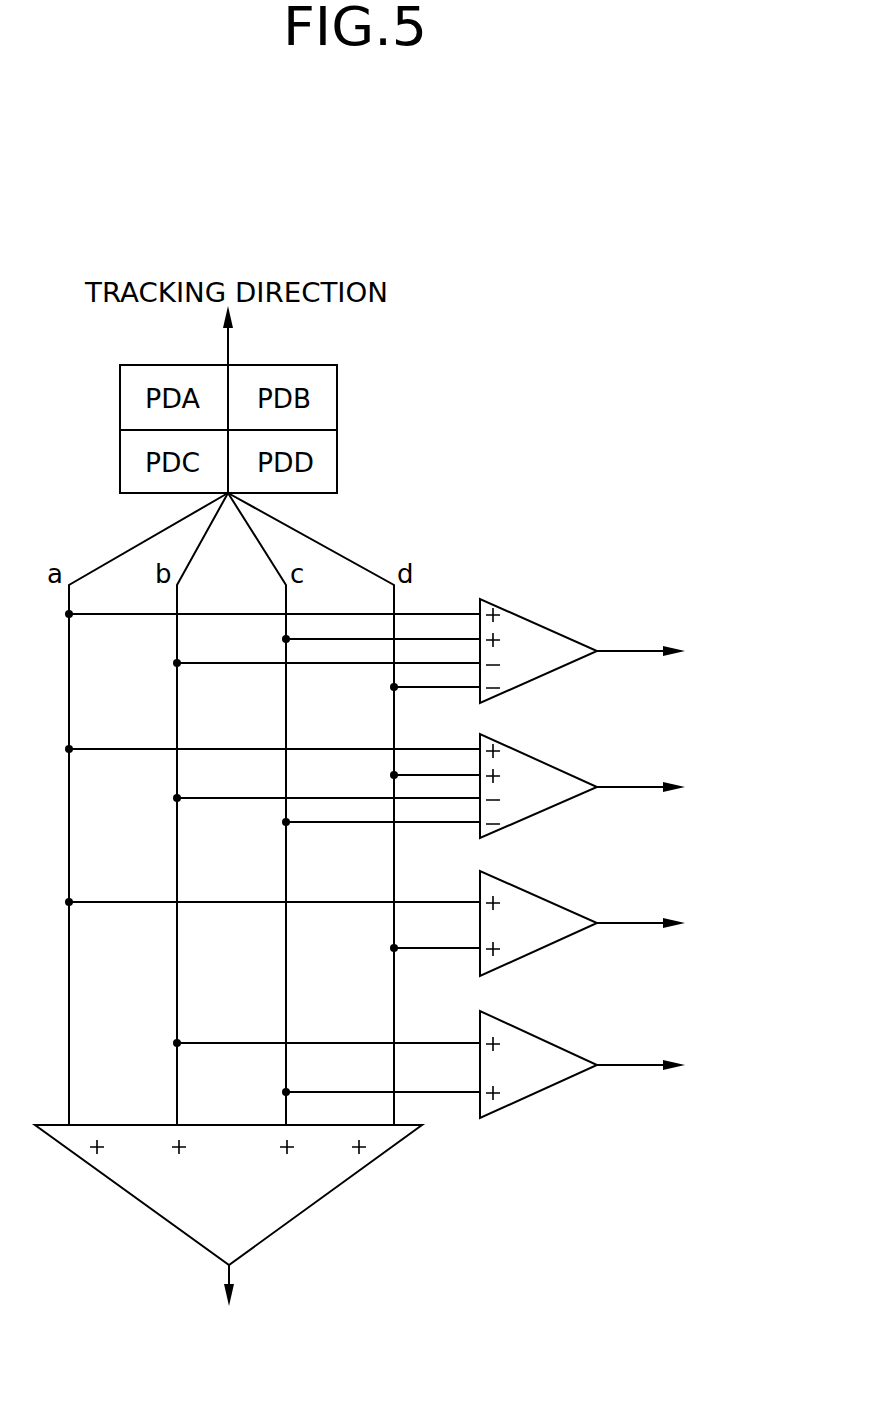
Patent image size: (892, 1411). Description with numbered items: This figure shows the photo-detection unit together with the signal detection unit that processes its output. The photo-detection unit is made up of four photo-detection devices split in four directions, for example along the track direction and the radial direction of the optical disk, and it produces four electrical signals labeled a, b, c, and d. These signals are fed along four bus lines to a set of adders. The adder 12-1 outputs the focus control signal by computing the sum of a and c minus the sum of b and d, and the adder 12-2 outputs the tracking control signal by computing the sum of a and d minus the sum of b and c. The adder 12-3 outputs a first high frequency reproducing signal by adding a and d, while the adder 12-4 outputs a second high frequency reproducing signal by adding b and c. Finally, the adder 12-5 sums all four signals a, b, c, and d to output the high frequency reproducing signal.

The adder 12-1 is at (400, 639).
The adder 12-2 is at (400, 775).
The adder 12-3 is at (416, 914).
The adder 12-4 is at (470, 1055).
The adder 12-5 is at (228, 1238).